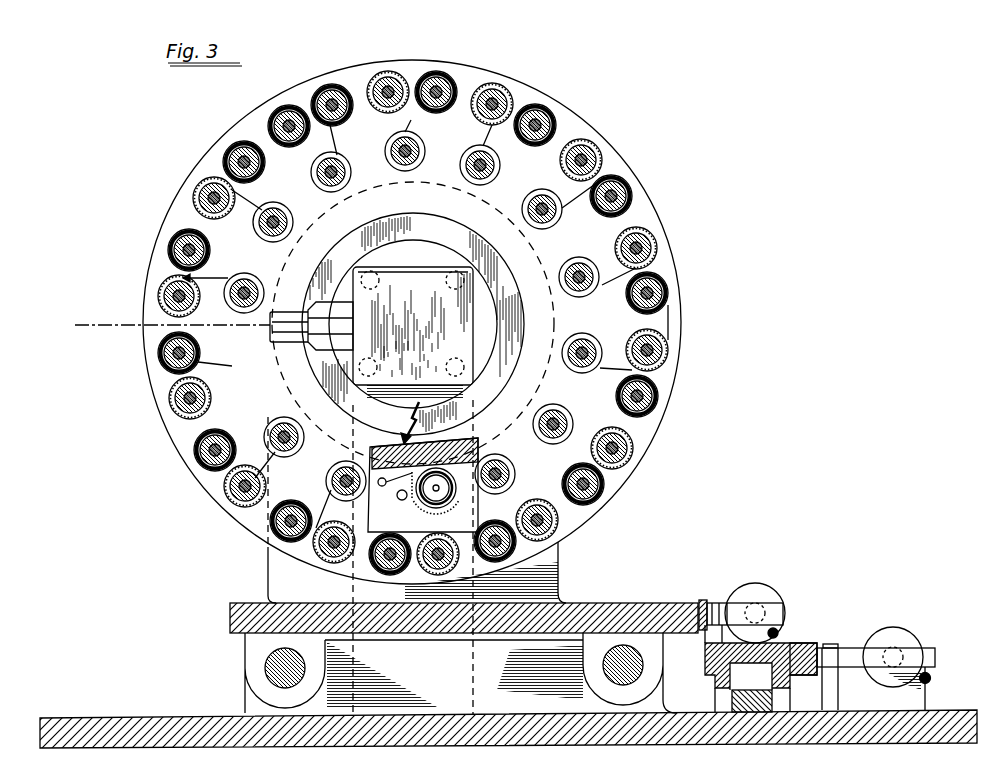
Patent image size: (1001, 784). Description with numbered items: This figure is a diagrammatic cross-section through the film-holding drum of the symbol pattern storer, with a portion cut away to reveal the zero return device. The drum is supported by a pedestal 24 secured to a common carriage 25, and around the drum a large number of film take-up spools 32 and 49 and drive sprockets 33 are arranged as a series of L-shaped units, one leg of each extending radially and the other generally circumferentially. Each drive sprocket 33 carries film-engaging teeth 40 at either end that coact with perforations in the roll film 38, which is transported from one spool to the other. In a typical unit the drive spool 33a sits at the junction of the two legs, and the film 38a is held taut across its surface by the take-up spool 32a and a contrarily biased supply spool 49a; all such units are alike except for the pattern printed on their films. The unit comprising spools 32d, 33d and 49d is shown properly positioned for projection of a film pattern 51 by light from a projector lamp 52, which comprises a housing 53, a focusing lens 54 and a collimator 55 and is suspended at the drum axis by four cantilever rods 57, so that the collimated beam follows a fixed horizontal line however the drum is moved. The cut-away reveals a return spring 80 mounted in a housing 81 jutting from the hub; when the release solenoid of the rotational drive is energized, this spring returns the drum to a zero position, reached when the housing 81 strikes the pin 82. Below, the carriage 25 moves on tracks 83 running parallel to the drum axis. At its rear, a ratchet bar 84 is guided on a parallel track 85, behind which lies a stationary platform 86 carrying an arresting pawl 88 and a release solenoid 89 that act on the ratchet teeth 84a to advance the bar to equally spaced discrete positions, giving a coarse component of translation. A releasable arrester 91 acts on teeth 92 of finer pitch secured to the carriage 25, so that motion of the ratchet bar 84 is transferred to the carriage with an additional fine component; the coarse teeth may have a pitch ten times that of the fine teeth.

The pedestal 24 is at (268, 582).
The carriage 25 is at (232, 607).
The film take-up spool 32 is at (320, 171).
The take-up spool 32a is at (403, 172).
The take-up spool 32d is at (249, 283).
The drive sprocket 33 is at (494, 90).
The drive spool 33a is at (390, 72).
The drive spool 33d is at (158, 297).
The roll film 38 is at (330, 141).
The film 38a is at (411, 122).
The film-engaging teeth 40 is at (326, 137).
The film take-up spool 49 is at (443, 83).
The supply spool 49a is at (333, 91).
The supply spool 49d is at (160, 360).
The film pattern 51 is at (150, 326).
The projector lamp 52 is at (458, 268).
The housing 53 is at (395, 278).
The focusing lens 54 is at (350, 329).
The collimator 55 is at (284, 312).
The cantilever rods 57 is at (452, 367).
The return spring 80 is at (448, 510).
The housing 81 is at (384, 487).
The pin 82 is at (401, 500).
The tracks 83 is at (275, 664).
The ratchet bar 84 is at (708, 660).
The ratchet teeth 84a is at (805, 644).
The track 85 is at (773, 698).
The stationary platform 86 is at (946, 712).
The arresting pawl 88 is at (848, 648).
The release solenoid 89 is at (894, 632).
The releasable arrester 91 is at (712, 600).
The teeth 92 is at (702, 600).